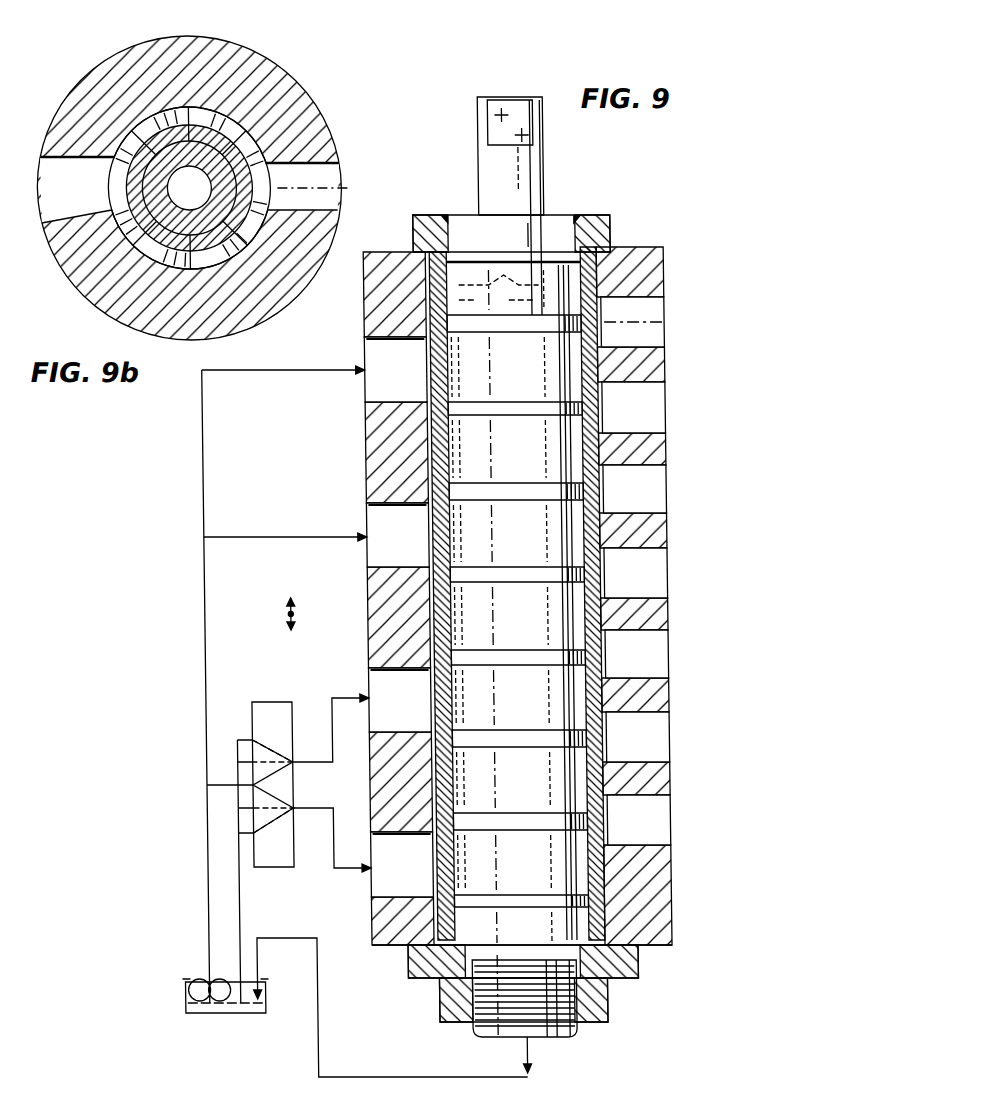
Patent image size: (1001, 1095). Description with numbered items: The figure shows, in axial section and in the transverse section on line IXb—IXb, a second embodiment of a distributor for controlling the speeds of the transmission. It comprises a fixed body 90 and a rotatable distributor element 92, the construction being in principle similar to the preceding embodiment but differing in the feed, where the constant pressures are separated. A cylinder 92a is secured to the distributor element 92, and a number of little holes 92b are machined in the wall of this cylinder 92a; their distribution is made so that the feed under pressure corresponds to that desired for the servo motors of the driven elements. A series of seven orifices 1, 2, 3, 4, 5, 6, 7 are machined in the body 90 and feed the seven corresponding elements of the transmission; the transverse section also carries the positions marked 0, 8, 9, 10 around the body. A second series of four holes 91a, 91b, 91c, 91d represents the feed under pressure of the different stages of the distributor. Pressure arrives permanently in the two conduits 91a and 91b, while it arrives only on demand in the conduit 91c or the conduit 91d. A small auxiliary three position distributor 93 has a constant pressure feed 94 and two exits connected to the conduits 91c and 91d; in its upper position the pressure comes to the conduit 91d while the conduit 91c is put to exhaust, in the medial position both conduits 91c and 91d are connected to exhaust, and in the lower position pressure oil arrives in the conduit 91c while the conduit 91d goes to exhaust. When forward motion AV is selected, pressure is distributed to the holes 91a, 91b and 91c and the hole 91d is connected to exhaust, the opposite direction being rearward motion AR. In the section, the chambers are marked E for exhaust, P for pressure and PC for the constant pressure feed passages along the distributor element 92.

In FIG. 9, the fixed body 90 is at (366, 778).
In FIG. 9, the conduit 91a is at (405, 368).
In FIG. 9, the conduit 91b is at (397, 535).
In FIG. 9, the conduit 91c is at (400, 700).
In FIG. 9, the conduit 91d is at (402, 864).
In FIG. 9, the rotatable distributor element 92 is at (450, 634).
In FIG. 9, the cylinder 92a is at (426, 544).
In FIG. 9, the holes 92b is at (426, 709).
In FIG. 9, the auxiliary three position distributor 93 is at (273, 784).
In FIG. 9, the constant pressure feed 94 is at (229, 786).
In FIG. 9, the orifice 1 is at (694, 320).
In FIG. 9b, the orifice 1 is at (210, 170).
In FIG. 9, the orifice 2 is at (642, 407).
In FIG. 9b, the orifice 2 is at (196, 175).
In FIG. 9, the orifice 3 is at (645, 654).
In FIG. 9b, the orifice 3 is at (186, 165).
In FIG. 9, the orifice 4 is at (643, 491).
In FIG. 9b, the orifice 4 is at (117, 100).
In FIG. 9, the orifice 5 is at (647, 737).
In FIG. 9b, the orifice 5 is at (100, 161).
In FIG. 9, the orifice 6 is at (648, 820).
In FIG. 9b, the orifice 6 is at (85, 223).
In FIG. 9, the orifice 7 is at (644, 573).
In FIG. 9b, the orifice 7 is at (160, 235).
In FIG. 9b, the port 8 is at (190, 212).
In FIG. 9b, the port 9 is at (215, 230).
In FIG. 9b, the port 10 is at (263, 240).
In FIG. 9b, the port 0 is at (311, 186).
In FIG. 9, the exhaust chamber E is at (533, 772).
In FIG. 9, the pilot control chamber PC is at (448, 392).
In FIG. 9, the pressure chamber P is at (450, 708).
In FIG. 9, the rearward direction AR is at (291, 605).
In FIG. 9, the forward direction AV is at (291, 647).